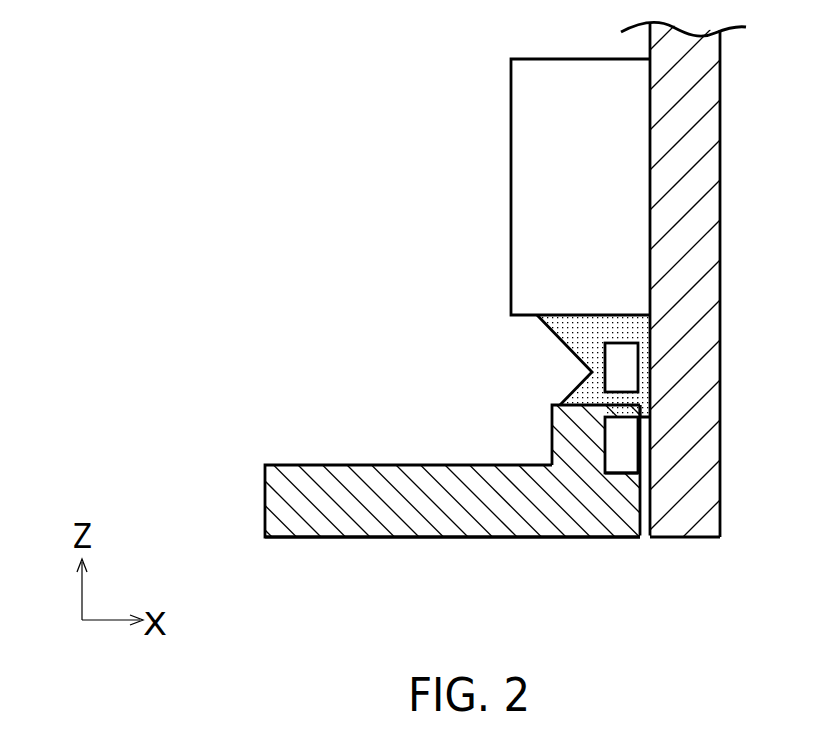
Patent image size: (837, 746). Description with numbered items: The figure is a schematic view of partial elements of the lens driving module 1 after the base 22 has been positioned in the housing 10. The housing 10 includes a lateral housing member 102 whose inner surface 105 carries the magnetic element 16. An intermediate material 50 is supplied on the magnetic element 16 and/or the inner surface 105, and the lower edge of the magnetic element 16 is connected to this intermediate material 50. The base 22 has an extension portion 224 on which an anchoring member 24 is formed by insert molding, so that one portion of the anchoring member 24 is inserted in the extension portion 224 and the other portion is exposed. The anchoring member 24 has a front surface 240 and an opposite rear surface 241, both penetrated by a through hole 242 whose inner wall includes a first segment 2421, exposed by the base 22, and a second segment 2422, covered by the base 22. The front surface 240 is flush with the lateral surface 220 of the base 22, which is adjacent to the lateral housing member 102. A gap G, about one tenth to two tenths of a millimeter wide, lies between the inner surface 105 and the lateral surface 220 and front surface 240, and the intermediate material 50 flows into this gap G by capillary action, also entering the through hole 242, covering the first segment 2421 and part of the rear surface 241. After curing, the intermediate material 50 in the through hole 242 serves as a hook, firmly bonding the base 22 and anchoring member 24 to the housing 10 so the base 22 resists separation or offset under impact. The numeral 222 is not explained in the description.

The lens driving module 1 is at (303, 92).
The housing 10 is at (722, 305).
The magnetic element 16 is at (612, 158).
The inner surface 105 is at (652, 228).
The lateral housing member 102 is at (702, 273).
The intermediate material 50 is at (595, 327).
The base 22 is at (467, 498).
The bottom portion of back plate 222 is at (405, 522).
The extension portion 224 is at (567, 438).
The lateral surface 220 is at (641, 502).
The front surface 240 is at (642, 455).
The anchoring member 24 is at (694, 478).
The through hole 242 is at (628, 400).
The first segment 2421 is at (625, 386).
The second segment 2422 is at (620, 423).
The rear surface 241 is at (632, 477).
The gap G is at (642, 540).